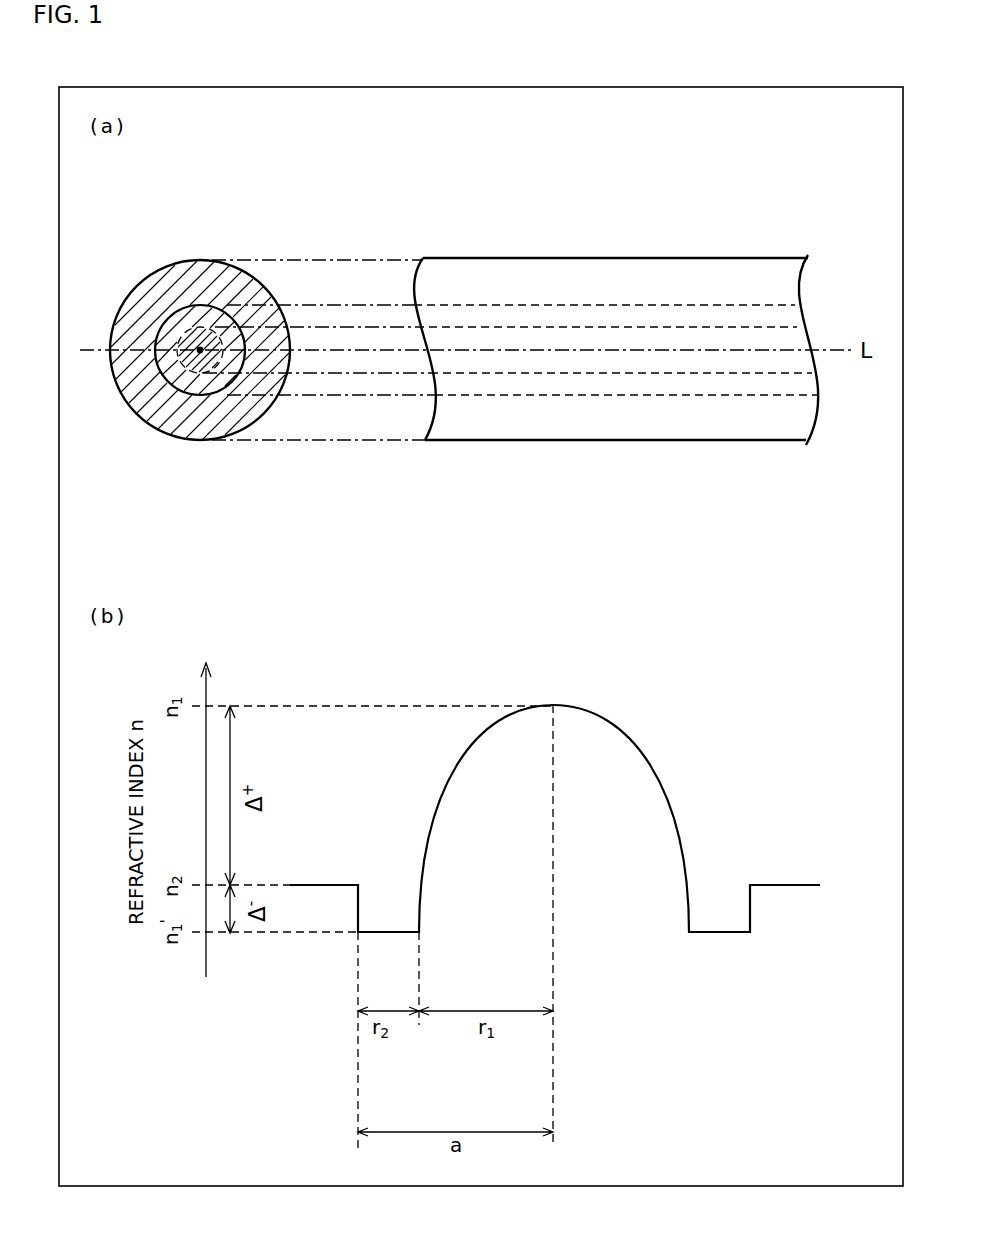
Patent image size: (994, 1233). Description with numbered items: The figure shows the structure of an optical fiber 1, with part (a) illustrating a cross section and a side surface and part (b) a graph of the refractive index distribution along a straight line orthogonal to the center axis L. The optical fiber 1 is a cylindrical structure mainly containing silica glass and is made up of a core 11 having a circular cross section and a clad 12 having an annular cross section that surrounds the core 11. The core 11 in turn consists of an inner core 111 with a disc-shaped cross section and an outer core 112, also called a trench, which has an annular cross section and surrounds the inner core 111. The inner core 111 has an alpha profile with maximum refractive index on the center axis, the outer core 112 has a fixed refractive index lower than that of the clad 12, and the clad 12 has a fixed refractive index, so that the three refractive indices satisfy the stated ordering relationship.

The optical fiber 1 is at (222, 224).
The core 11 is at (232, 499).
The inner core 111 is at (217, 375).
The outer core 112 is at (177, 366).
The clad 12 is at (142, 407).